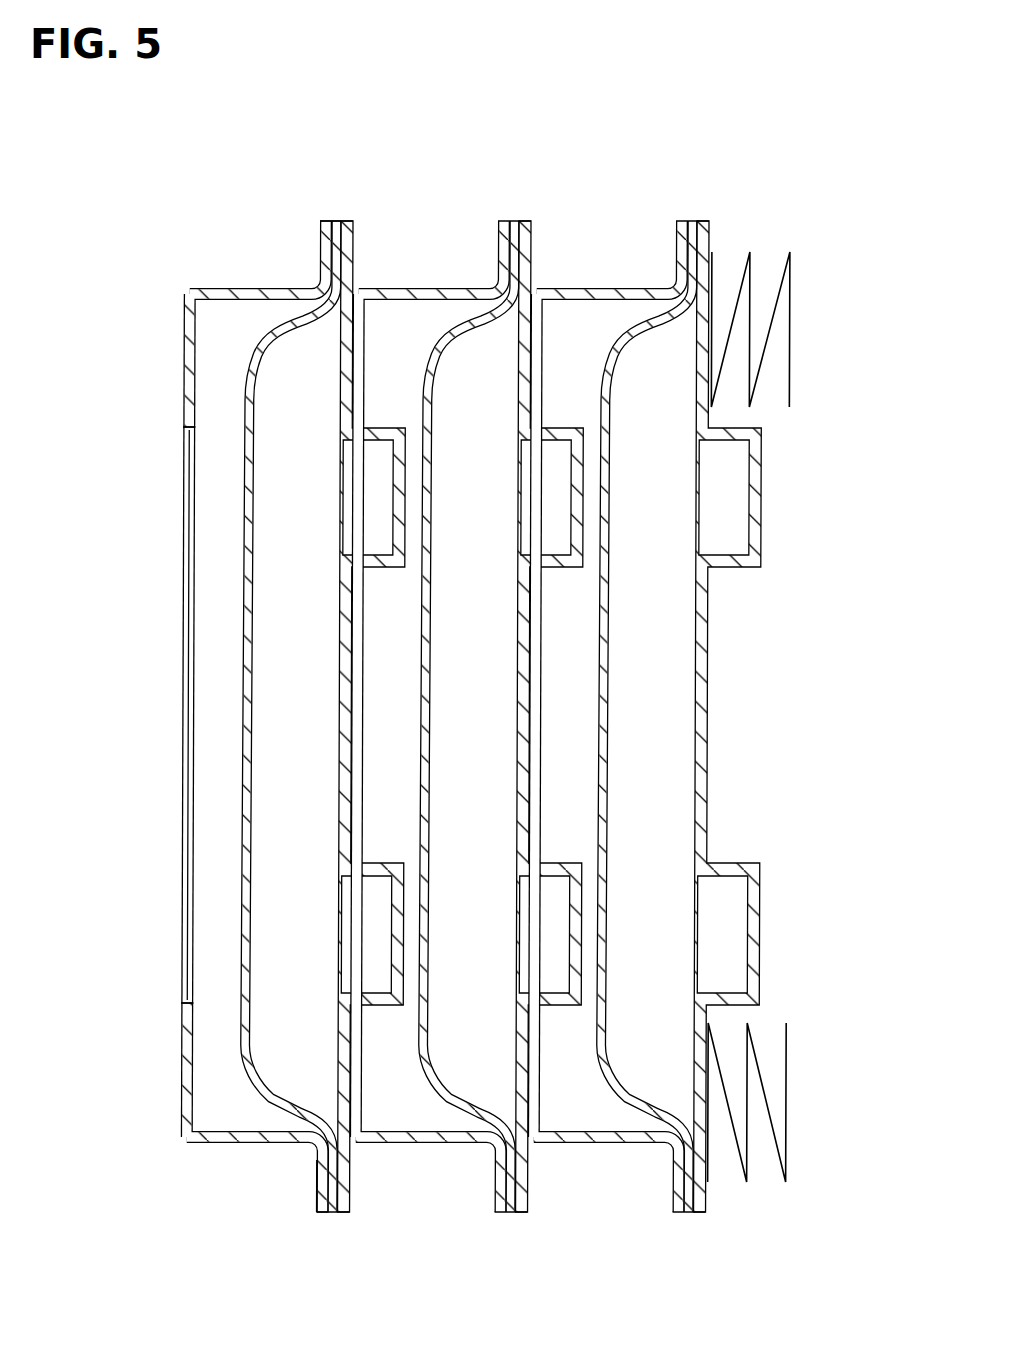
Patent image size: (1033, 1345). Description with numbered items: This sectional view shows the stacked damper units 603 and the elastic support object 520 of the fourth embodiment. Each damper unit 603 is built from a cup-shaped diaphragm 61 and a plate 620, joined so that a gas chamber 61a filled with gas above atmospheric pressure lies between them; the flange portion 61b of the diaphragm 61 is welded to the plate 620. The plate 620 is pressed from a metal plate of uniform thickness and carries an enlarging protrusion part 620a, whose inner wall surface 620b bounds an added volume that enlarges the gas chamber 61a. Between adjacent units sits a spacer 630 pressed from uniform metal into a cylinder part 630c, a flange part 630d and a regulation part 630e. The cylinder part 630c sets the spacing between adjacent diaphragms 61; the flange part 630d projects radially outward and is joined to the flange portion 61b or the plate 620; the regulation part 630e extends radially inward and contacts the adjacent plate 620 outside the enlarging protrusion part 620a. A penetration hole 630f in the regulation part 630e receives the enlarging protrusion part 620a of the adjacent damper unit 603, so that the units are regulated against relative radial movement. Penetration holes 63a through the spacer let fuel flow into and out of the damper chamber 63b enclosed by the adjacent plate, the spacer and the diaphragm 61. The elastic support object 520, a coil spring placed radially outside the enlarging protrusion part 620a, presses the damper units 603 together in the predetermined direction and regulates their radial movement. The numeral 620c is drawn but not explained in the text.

The damper unit 603 is at (442, 727).
The diaphragm 61 is at (216, 693).
The gas chamber 61a is at (661, 703).
The flange portion of the diaphragm 61b is at (322, 254).
The plate 620 is at (345, 597).
The enlarging protrusion part 620a is at (763, 517).
The inner wall surface of the enlarging protrusion part 620b is at (733, 444).
The side wall portion of separator plate 620c is at (542, 410).
The spacer 630 is at (210, 747).
The penetration hole 63a is at (246, 288).
The damper chamber 63b is at (214, 722).
The cylinder part 630c is at (203, 1144).
The flange part 630d is at (316, 1190).
The regulation part 630e is at (187, 1082).
The penetration hole of the regulation part 630f is at (359, 1000).
The elastic support object 520 is at (790, 1114).